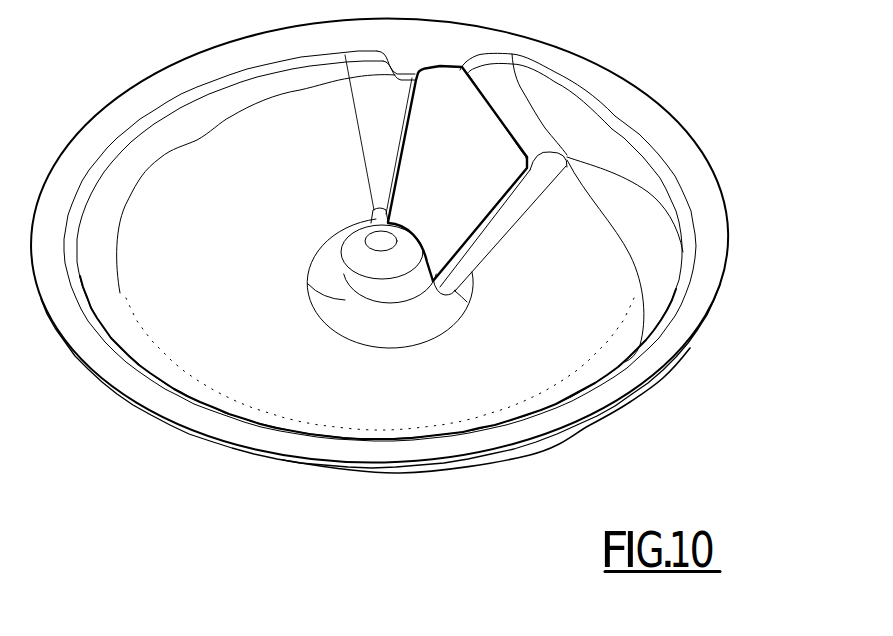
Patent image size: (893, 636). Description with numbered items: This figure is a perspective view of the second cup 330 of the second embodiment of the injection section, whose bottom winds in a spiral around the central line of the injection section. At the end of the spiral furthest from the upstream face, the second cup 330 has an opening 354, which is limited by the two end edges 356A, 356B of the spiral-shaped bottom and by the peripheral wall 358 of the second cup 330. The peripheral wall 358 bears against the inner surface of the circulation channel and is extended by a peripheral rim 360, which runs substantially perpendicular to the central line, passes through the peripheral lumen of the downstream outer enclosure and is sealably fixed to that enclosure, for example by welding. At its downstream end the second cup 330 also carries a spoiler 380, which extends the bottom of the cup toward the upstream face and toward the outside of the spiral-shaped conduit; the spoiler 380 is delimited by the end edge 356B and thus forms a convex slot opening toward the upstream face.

The second cup 330 is at (168, 350).
The opening 354 is at (497, 100).
The end edge 356A is at (407, 130).
The end edge 356B is at (478, 228).
The peripheral wall 358 is at (600, 133).
The peripheral rim 360 is at (665, 343).
The spoiler 380 is at (498, 232).